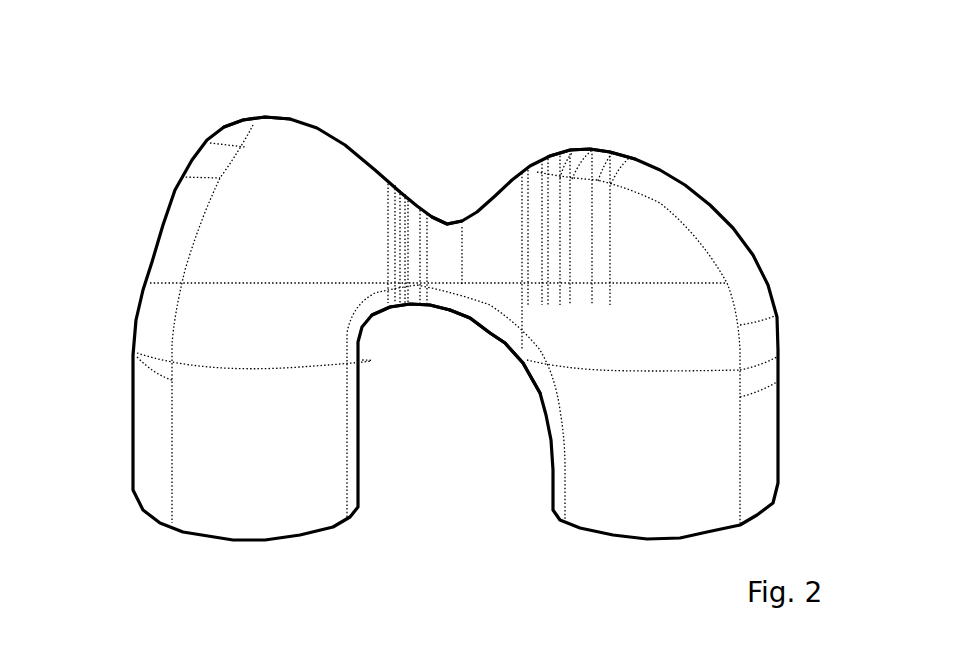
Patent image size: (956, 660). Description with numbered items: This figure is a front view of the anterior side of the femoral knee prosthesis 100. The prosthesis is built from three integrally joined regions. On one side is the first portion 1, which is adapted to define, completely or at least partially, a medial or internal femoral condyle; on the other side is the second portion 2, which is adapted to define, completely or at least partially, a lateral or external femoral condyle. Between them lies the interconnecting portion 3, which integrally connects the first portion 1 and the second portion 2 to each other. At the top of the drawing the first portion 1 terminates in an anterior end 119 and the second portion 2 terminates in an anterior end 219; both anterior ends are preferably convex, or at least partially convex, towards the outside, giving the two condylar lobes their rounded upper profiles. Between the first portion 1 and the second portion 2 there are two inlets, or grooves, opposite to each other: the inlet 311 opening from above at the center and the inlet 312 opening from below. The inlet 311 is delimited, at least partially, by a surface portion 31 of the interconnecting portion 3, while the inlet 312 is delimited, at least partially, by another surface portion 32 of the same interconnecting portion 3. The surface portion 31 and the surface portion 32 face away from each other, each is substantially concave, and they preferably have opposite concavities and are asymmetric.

The femoral component (knee implant) 100 is at (152, 100).
The first portion 1 is at (163, 313).
The second portion 2 is at (703, 313).
The interconnecting portion 3 is at (443, 260).
The surface portion 31 is at (423, 208).
The inlet 311 is at (445, 203).
The inlet 312 is at (423, 333).
The surface portion 32 is at (450, 310).
The anterior end 119 is at (243, 120).
The anterior end 219 is at (593, 150).